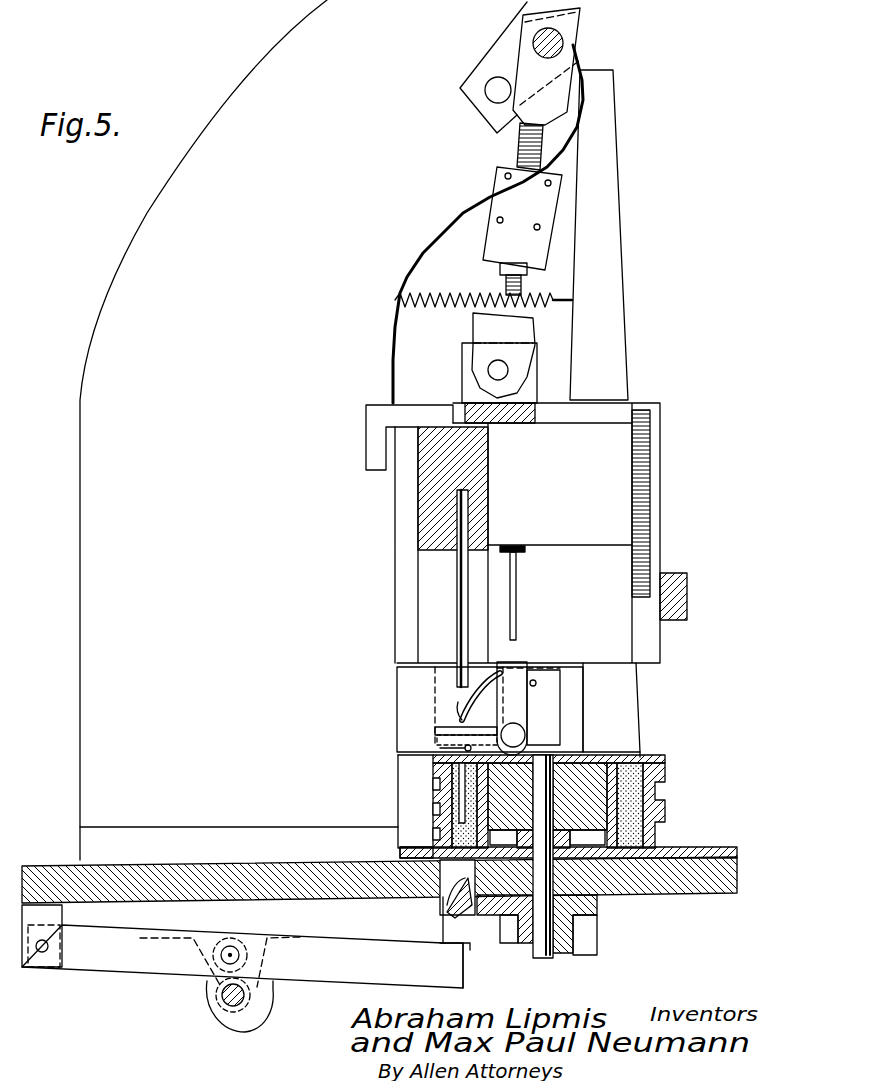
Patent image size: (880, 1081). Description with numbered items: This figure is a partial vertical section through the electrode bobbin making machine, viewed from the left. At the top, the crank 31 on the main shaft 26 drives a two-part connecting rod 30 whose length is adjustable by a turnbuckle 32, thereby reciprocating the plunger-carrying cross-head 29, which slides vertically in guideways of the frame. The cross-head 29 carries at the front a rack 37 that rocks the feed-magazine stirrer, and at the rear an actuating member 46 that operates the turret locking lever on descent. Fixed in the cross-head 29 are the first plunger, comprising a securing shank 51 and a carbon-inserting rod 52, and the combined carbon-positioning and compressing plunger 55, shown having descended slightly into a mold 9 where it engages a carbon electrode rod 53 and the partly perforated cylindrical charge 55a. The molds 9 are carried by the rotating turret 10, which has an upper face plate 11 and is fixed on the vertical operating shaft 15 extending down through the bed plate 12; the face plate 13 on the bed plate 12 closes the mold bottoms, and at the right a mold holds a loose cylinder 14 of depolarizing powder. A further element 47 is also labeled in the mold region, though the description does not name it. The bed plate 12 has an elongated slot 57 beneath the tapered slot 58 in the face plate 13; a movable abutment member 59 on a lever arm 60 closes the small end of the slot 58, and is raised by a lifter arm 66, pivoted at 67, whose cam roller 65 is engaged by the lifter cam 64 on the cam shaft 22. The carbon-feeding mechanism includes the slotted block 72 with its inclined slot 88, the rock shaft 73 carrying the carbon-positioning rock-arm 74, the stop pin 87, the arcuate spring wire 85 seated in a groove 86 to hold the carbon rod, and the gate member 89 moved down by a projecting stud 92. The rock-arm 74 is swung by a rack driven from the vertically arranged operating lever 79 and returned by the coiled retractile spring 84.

The vertical molds 9 is at (434, 837).
The rotating turret 10 is at (666, 773).
The face plate 11 is at (666, 760).
The bed plate 12 is at (736, 868).
The face plate 13 is at (723, 845).
The cylinder of loose depolarizing powder 14 is at (641, 753).
The vertical operating shaft 15 is at (537, 958).
The cam shaft 22 is at (225, 1006).
The main shaft 26 is at (498, 95).
The plunger-carrying cross-head 29 is at (485, 468).
The two-part connecting rod 30 is at (575, 25).
The crank 31 is at (590, 49).
The turnbuckle 32 is at (547, 218).
The rack 37 is at (651, 472).
The actuating member 46 is at (369, 470).
The packing 47 is at (435, 798).
The securing shank 51 is at (522, 553).
The carbon-inserting rod 52 is at (517, 600).
The carbon electrode rod 53 is at (435, 771).
The combined carbon-positioning and compressing plunger 55 is at (468, 583).
The partly perforated cylindrical charge 55a is at (435, 817).
The elongated slot 57 is at (408, 898).
The tapered slot 58 is at (398, 853).
The movable abutment member 59 is at (447, 898).
The lever arm 60 is at (468, 943).
The lifter cam 64 is at (248, 1030).
The cam roller 65 is at (237, 946).
The lifter arm 66 is at (313, 977).
The pivot 67 is at (42, 953).
The slotted block 72 is at (542, 674).
The rock shaft 73 is at (518, 737).
The carbon-positioning rock-arm 74 is at (522, 667).
The operating lever 79 is at (612, 235).
The coiled retractile spring 84 is at (428, 293).
The arcuate spring wire 85 is at (483, 688).
The groove 86 is at (458, 702).
The stop pin 87 is at (537, 683).
The inclined slot 88 is at (440, 726).
The gate member 89 is at (440, 741).
The projecting stud 92 is at (399, 747).